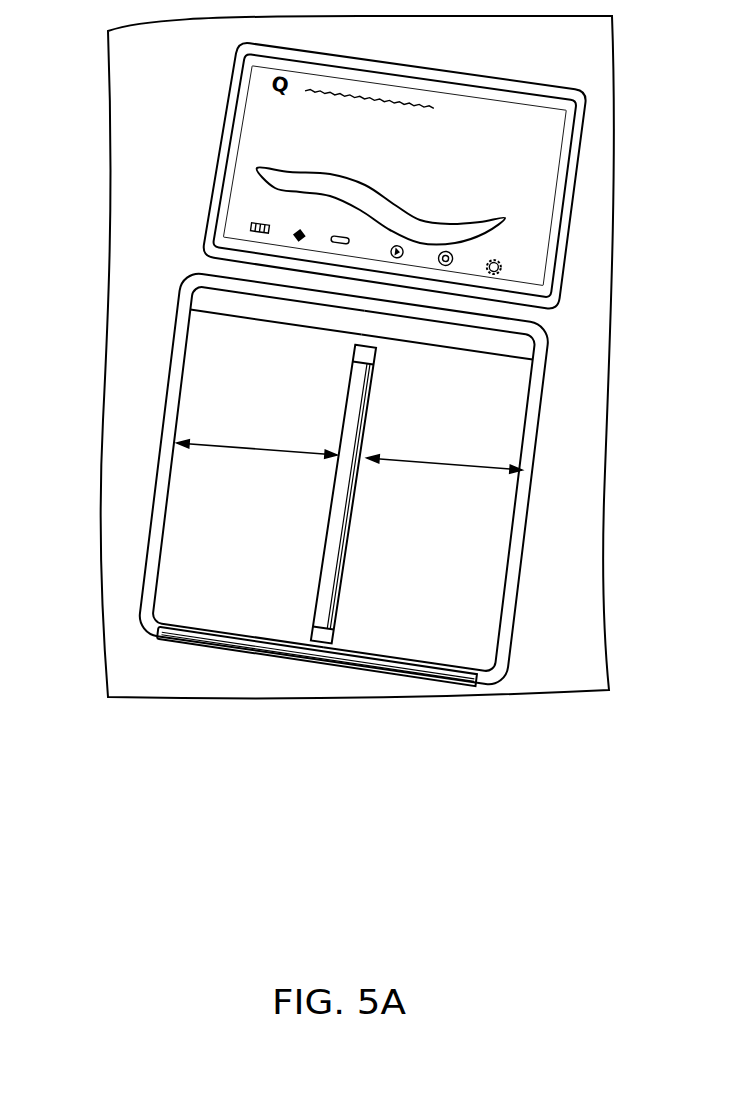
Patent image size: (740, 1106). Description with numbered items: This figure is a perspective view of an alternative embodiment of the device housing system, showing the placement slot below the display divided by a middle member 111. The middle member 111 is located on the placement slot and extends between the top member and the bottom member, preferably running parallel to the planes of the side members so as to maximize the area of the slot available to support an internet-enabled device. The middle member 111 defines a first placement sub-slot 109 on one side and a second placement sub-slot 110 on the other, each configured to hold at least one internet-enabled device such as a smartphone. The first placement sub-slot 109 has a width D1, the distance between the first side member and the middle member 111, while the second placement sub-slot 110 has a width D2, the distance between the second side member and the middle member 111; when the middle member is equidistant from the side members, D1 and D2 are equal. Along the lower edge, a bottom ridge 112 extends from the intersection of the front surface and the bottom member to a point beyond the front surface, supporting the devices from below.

The first placement sub-slot 109 is at (200, 371).
The second placement sub-slot 110 is at (518, 405).
The middle member 111 is at (345, 568).
The bottom ridge 112 is at (442, 675).
The width of the first placement sub-slot D1 is at (213, 449).
The width of the second placement sub-slot D2 is at (416, 472).